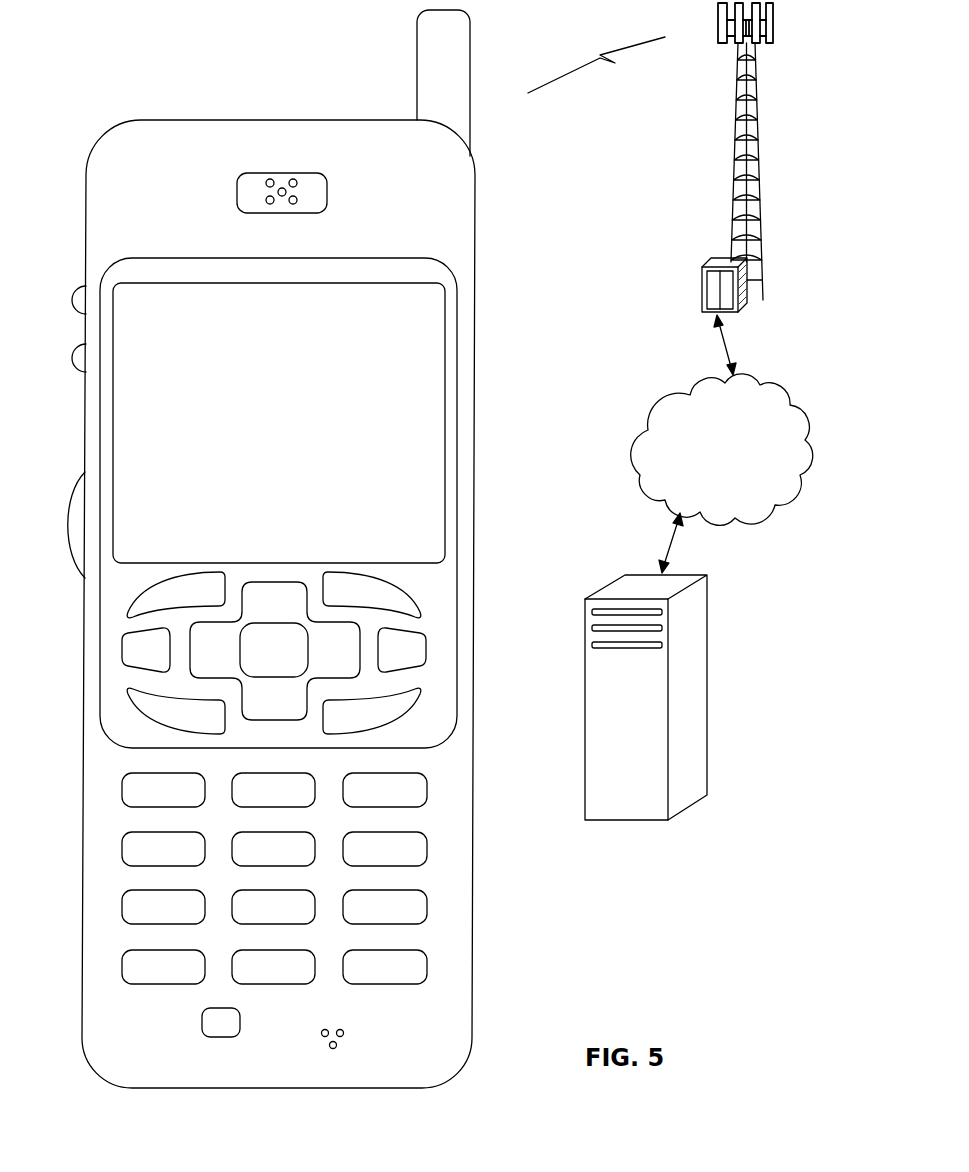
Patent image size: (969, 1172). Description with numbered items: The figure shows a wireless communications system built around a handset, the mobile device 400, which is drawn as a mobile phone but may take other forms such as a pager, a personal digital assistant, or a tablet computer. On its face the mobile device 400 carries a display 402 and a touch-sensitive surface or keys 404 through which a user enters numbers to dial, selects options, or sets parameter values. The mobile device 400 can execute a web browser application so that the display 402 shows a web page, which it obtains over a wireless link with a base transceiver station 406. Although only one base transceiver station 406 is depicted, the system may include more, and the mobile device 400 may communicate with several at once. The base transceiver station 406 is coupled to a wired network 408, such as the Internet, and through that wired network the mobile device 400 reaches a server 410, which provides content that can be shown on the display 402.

The mobile device 400 is at (305, 560).
The display 402 is at (447, 300).
The keys 404 is at (478, 975).
The base transceiver station 406 is at (732, 172).
The wired network 408 is at (650, 493).
The server 410 is at (628, 822).